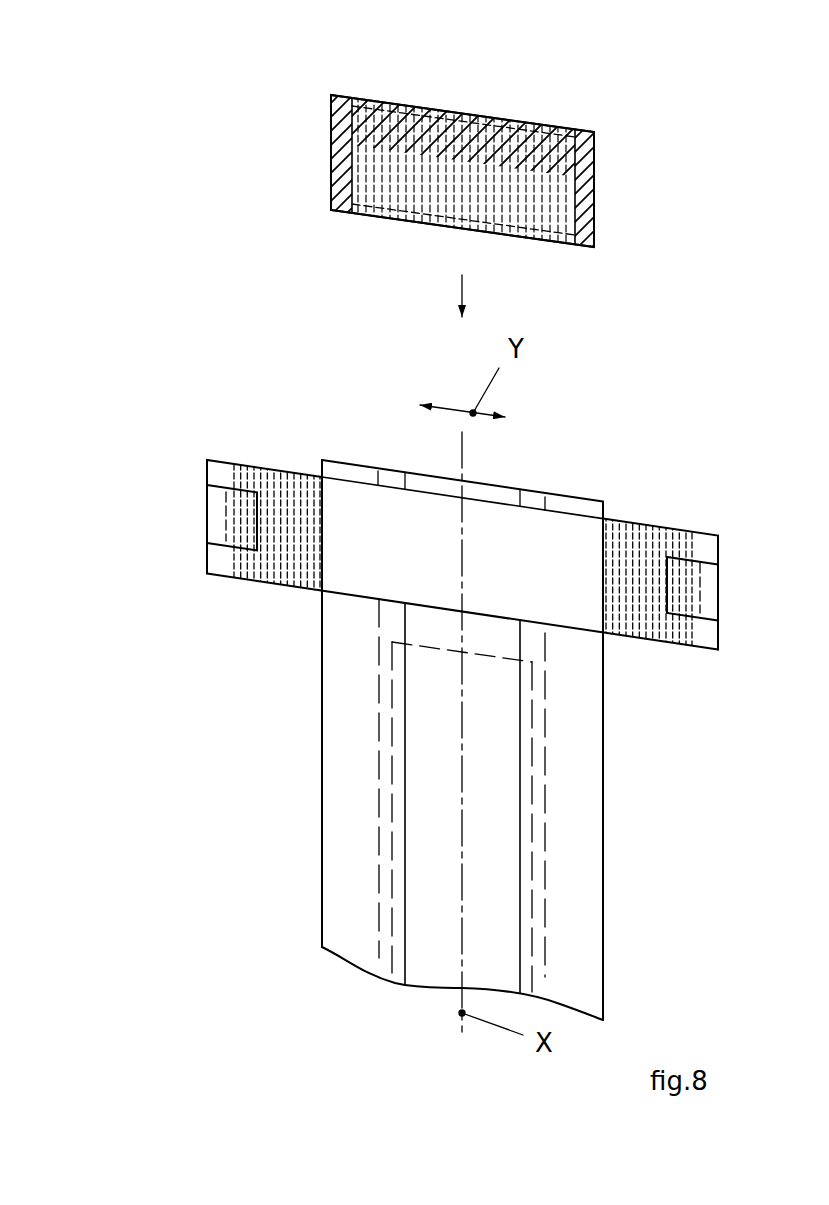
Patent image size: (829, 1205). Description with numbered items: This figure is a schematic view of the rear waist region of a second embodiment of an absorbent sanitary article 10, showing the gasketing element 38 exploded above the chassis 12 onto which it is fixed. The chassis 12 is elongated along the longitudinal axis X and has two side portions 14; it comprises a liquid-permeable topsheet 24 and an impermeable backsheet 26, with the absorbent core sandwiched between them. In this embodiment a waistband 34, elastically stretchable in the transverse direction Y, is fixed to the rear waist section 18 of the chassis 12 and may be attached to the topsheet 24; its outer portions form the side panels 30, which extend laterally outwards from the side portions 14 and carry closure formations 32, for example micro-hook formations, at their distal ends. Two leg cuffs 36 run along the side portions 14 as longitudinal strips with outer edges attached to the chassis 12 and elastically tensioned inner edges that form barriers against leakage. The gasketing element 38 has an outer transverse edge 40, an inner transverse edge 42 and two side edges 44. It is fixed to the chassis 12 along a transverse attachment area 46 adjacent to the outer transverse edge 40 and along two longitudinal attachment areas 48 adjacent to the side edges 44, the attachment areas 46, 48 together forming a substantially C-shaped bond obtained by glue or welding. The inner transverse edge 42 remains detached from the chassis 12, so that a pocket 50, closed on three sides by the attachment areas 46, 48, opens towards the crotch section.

The absorbent sanitary article 10 is at (133, 116).
The chassis 12 is at (643, 749).
The side portions 14 is at (345, 876).
The rear waist section 18 is at (318, 597).
The topsheet 24 is at (424, 960).
The backsheet 26 is at (603, 956).
The side panels 30 is at (253, 463).
The closure formations 32 is at (216, 503).
The waistband 34 is at (566, 503).
The leg cuffs 36 is at (345, 776).
The gasketing element 38 is at (522, 83).
The outer transverse edge 40 is at (432, 108).
The inner transverse edge 42 is at (513, 236).
The side edges 44 is at (332, 126).
The transverse attachment area 46 is at (518, 148).
The longitudinal attachment areas 48 is at (343, 185).
The pocket 50 is at (410, 193).